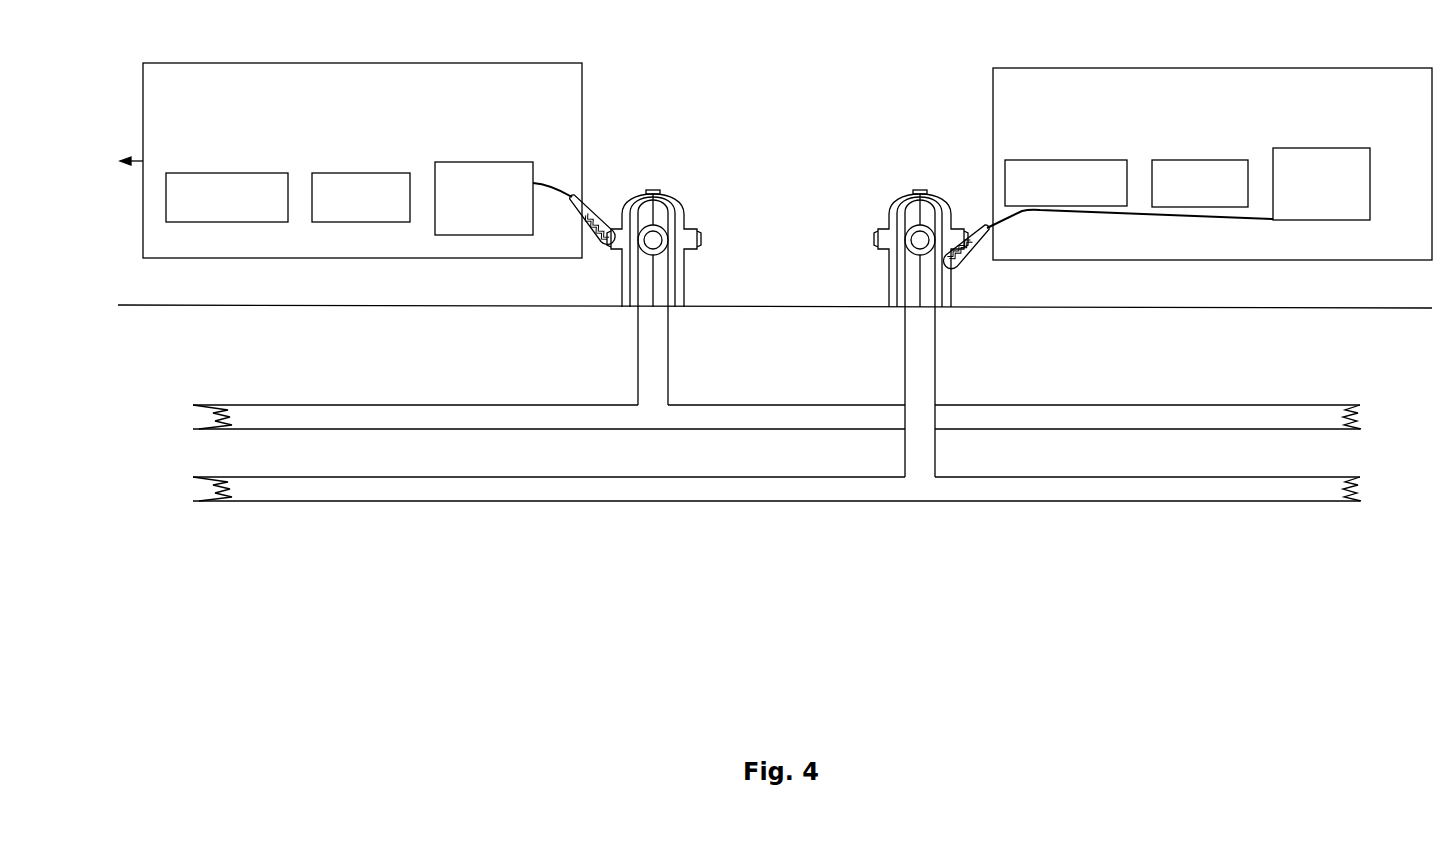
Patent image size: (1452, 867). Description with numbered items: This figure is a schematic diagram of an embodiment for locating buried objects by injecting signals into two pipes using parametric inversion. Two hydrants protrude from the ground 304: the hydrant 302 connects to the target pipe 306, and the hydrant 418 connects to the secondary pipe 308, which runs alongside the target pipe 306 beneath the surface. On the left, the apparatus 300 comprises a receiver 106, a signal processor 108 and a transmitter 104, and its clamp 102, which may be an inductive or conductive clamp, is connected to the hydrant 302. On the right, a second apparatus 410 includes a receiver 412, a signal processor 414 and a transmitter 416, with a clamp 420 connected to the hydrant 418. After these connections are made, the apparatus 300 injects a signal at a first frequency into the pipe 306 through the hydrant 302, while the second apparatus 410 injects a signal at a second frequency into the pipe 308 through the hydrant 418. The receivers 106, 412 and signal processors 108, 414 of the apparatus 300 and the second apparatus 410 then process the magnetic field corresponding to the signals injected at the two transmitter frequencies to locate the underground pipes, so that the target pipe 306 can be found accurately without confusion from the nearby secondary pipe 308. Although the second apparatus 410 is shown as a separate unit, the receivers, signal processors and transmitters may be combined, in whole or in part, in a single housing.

The apparatus 300 is at (360, 63).
The receiver 106 is at (196, 173).
The signal processor 108 is at (330, 173).
The transmitter 104 is at (478, 162).
The clamp 102 is at (582, 188).
The hydrant 302 is at (668, 198).
The ground 304 is at (725, 307).
The target pipe 306 is at (700, 405).
The secondary pipe 308 is at (700, 477).
The second apparatus 410 is at (1218, 68).
The receiver 412 is at (1035, 160).
The signal processor 414 is at (1172, 160).
The transmitter 416 is at (1315, 148).
The hydrant 418 is at (905, 197).
The clamp 420 is at (1010, 213).